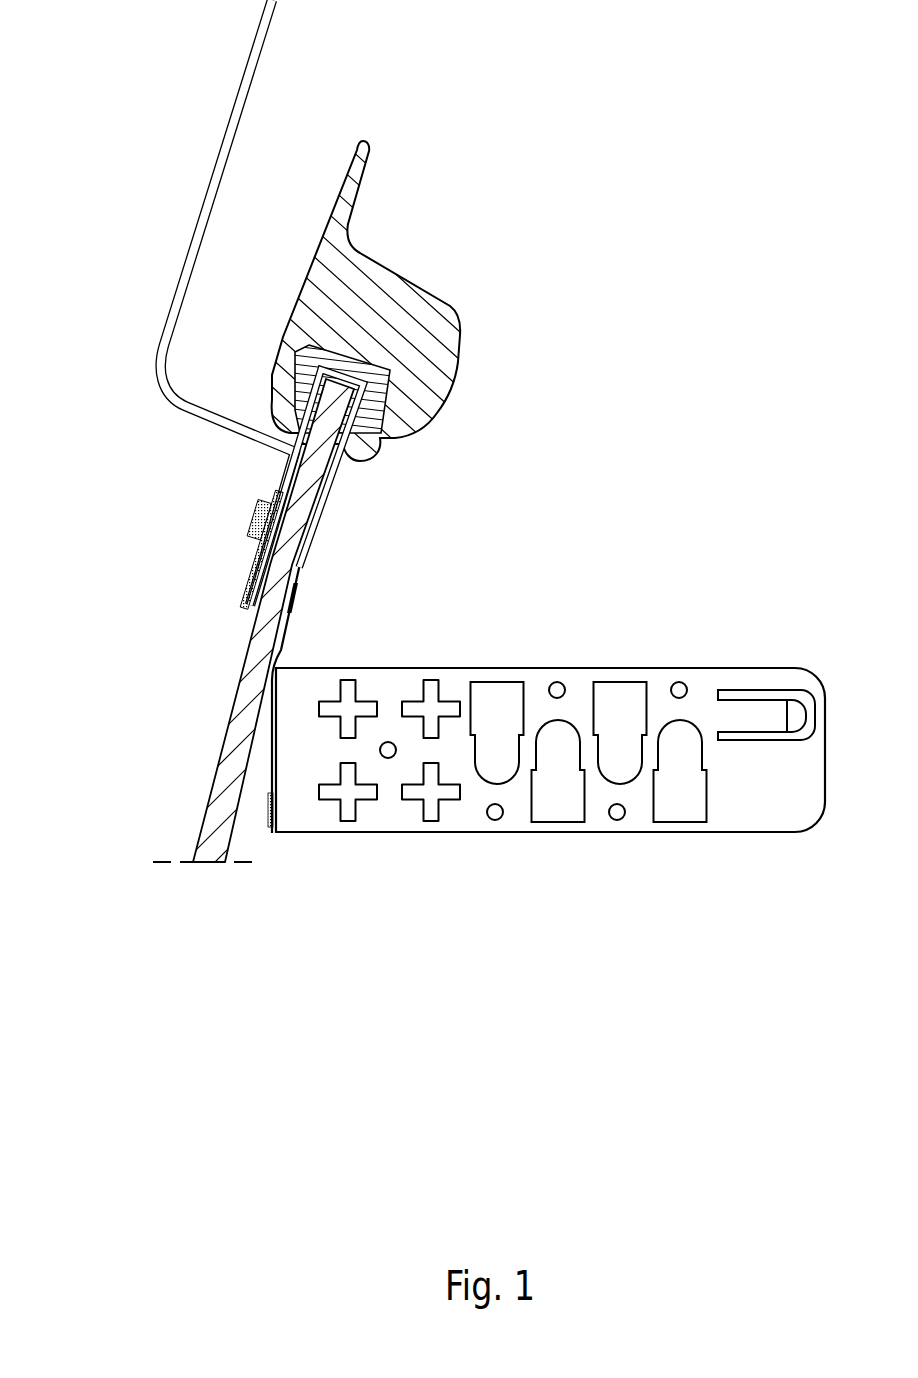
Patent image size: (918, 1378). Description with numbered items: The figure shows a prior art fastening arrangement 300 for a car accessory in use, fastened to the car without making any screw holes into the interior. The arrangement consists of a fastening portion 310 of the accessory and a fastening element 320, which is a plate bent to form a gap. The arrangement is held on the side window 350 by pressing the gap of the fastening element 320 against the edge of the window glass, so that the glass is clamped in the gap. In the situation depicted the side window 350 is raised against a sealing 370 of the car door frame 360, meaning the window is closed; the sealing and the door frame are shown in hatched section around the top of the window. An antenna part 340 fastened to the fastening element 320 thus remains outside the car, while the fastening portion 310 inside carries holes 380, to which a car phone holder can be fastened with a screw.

The fastening arrangement 300 is at (555, 585).
The fastening portion 310 is at (790, 808).
The fastening element 320 is at (340, 477).
The antenna part 340 is at (207, 205).
The side window 350 is at (225, 740).
The car door frame 360 is at (412, 290).
The sealing 370 is at (370, 390).
The holes 380 is at (683, 808).